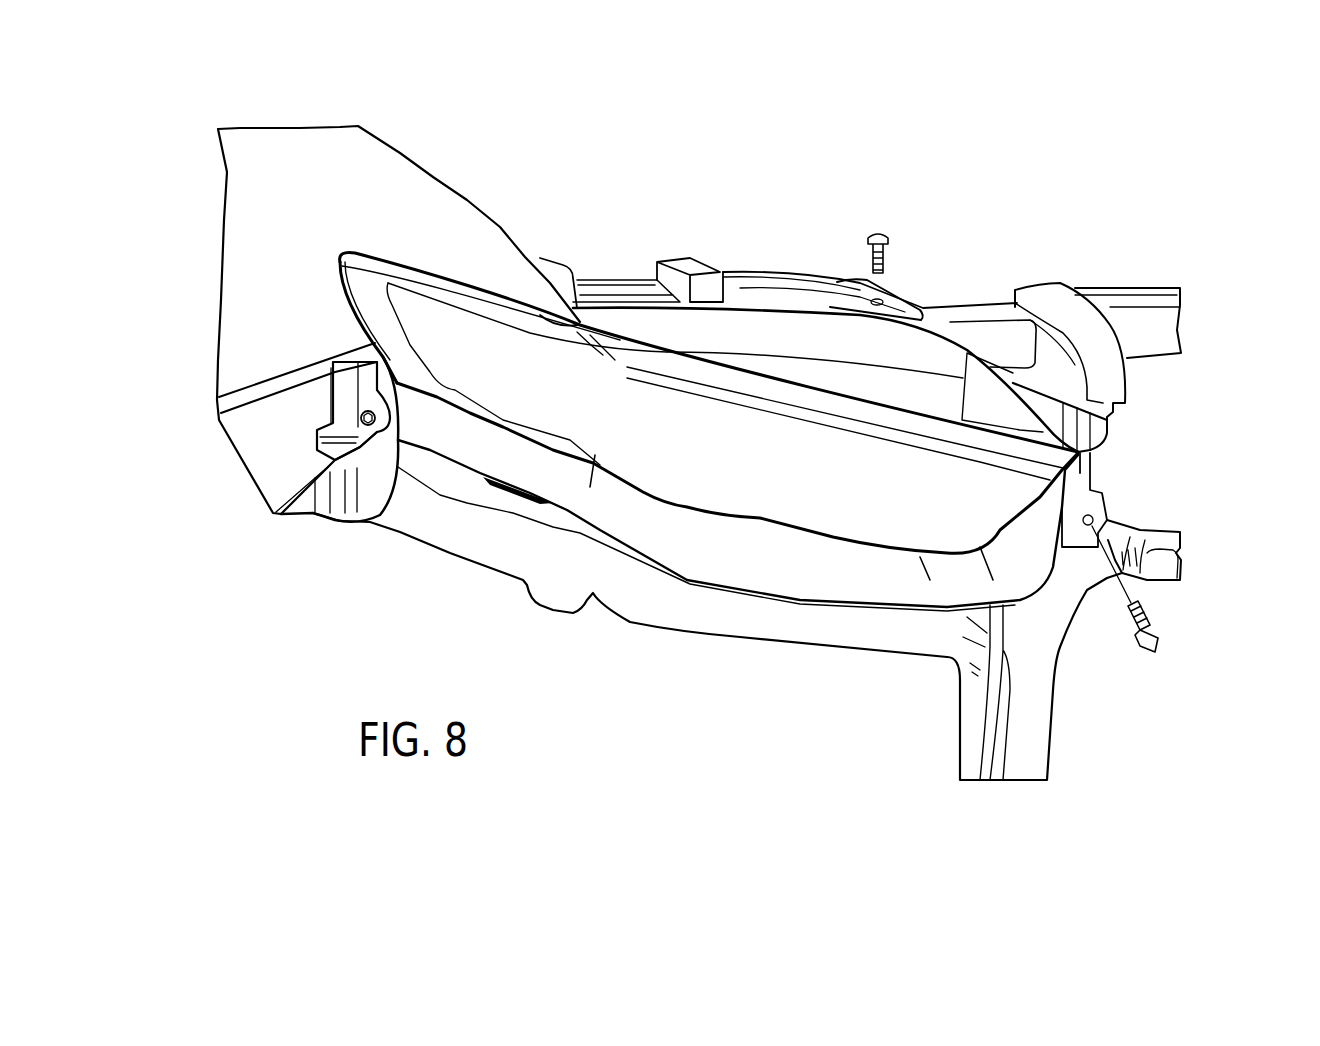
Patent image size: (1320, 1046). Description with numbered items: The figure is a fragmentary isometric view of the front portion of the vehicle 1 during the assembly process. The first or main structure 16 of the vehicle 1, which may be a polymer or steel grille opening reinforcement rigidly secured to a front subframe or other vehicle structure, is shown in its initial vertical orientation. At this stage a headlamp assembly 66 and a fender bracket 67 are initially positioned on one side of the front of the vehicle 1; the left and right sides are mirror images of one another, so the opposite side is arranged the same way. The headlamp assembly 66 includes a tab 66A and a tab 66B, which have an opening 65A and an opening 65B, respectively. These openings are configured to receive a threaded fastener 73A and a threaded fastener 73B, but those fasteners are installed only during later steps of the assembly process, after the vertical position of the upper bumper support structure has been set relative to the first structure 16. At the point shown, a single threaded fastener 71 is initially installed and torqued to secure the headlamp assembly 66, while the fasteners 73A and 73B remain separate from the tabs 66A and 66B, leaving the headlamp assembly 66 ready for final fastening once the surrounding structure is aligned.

The vehicle 1 is at (1148, 288).
The first structure 16 is at (1035, 697).
The opening 65A is at (1095, 520).
The opening 65B is at (893, 305).
The headlamp assembly 66 is at (683, 570).
The tab 66A is at (1100, 493).
The tab 66B is at (884, 296).
The fender bracket 67 is at (270, 465).
The threaded fastener 71 is at (362, 419).
The threaded fastener 73A is at (1160, 650).
The threaded fastener 73B is at (877, 232).